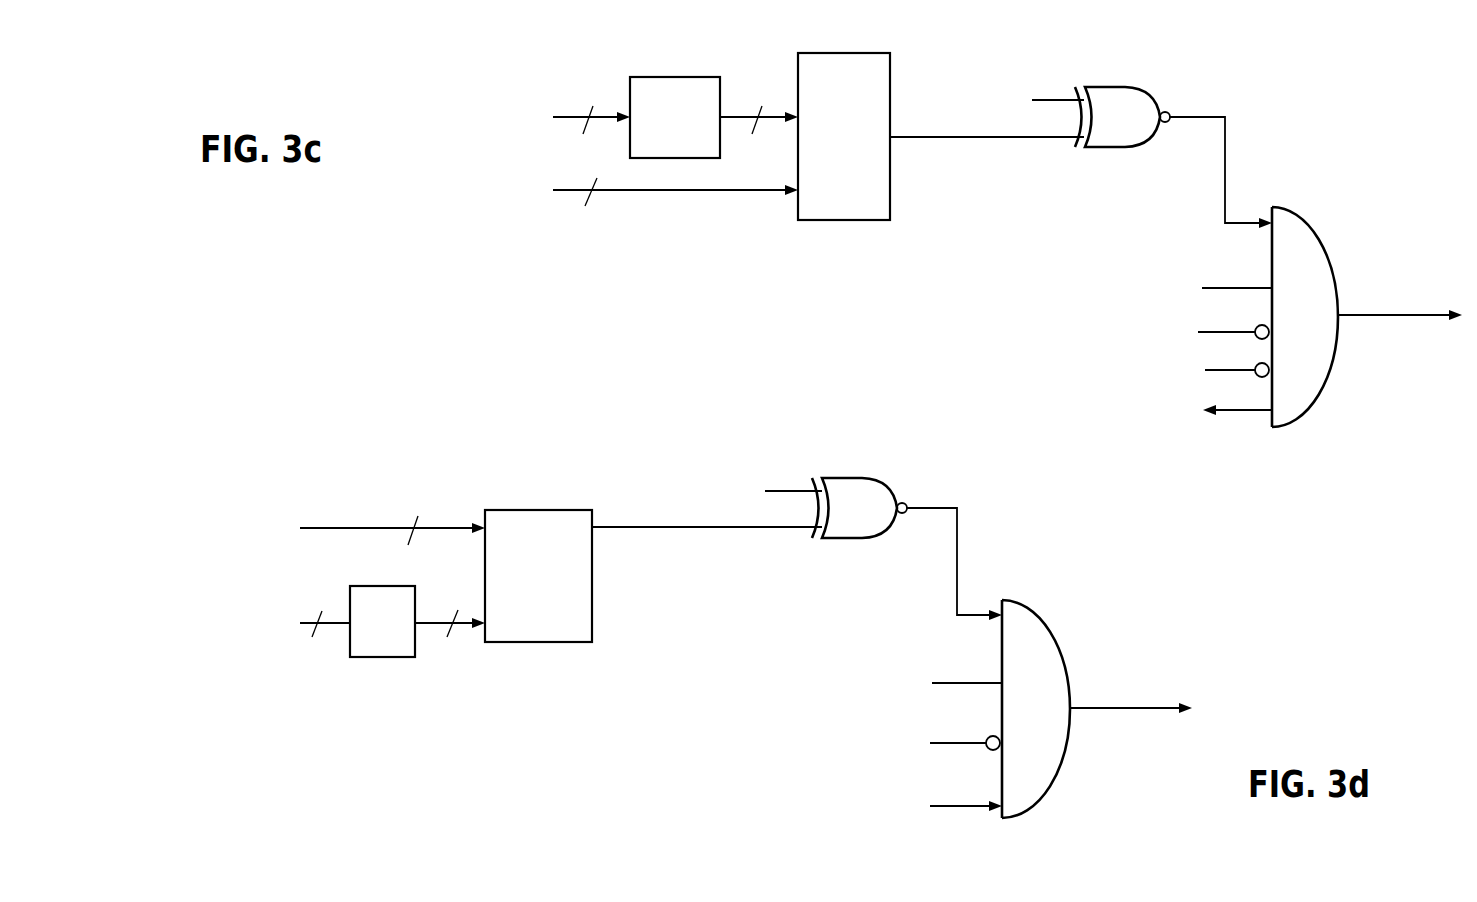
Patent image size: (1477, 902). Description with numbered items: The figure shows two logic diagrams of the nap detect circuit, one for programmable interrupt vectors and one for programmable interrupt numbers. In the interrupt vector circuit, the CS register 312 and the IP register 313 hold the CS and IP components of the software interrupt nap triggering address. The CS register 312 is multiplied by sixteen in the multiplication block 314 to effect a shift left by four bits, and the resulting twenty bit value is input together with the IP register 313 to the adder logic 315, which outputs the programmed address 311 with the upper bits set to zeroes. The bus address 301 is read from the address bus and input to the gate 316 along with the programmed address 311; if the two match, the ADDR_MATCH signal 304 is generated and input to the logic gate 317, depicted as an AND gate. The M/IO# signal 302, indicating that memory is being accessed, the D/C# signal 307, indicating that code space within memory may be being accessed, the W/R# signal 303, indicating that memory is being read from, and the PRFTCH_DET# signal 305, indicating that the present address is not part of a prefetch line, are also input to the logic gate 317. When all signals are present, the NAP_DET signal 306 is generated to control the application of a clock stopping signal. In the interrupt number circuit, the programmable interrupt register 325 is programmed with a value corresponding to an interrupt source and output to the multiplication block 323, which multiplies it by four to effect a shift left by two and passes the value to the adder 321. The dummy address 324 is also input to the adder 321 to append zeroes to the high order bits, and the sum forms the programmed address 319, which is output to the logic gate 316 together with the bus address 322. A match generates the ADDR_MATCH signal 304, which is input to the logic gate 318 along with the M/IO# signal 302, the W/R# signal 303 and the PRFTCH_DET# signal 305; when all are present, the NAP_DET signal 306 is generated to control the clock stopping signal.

In FIG. 3C, the ADDR[31:3] 301 is at (1042, 100).
In FIG. 3C, the M/IO# signal 302 is at (1253, 288).
In FIG. 3D, the M/IO# signal 302 is at (985, 683).
In FIG. 3C, the W/R# signal 303 is at (1205, 371).
In FIG. 3D, the W/R# signal 303 is at (940, 744).
In FIG. 3C, the ADDR_MATCH signal 304 is at (1185, 120).
In FIG. 3D, the ADDR_MATCH signal 304 is at (915, 512).
In FIG. 3C, the PRFTCH_DET# signal 305 is at (1235, 413).
In FIG. 3D, the PRFTCH_DET# signal 305 is at (967, 808).
In FIG. 3C, the NAP_DET signal 306 is at (1390, 318).
In FIG. 3D, the NAP_DET signal 306 is at (1125, 712).
In FIG. 3C, the D/C# signal 307 is at (1200, 333).
In FIG. 3C, the PROG_ADDR[31:3] 311 is at (1062, 137).
In FIG. 3C, the CS_REG[15:0] 312 is at (567, 116).
In FIG. 3C, the IP_REG[15:0] 313 is at (568, 192).
In FIG. 3C, the multiplication block 314 is at (666, 77).
In FIG. 3C, the adder logic 315 is at (840, 53).
In FIG. 3C, the gate 316 is at (1115, 87).
In FIG. 3D, the gate 316 is at (850, 478).
In FIG. 3C, the logic gate 317 is at (1295, 210).
In FIG. 3D, the logic gate 318 is at (1030, 603).
In FIG. 3D, the PROG_ADDR[31:2] 319 is at (797, 530).
In FIG. 3D, the adder 321 is at (557, 642).
In FIG. 3D, the ADDR[31:2] 322 is at (771, 487).
In FIG. 3D, the multiplication block 323 is at (387, 657).
In FIG. 3D, the dummy address 324 is at (347, 525).
In FIG. 3D, the PROG_INT_REG[7:0] 325 is at (330, 627).